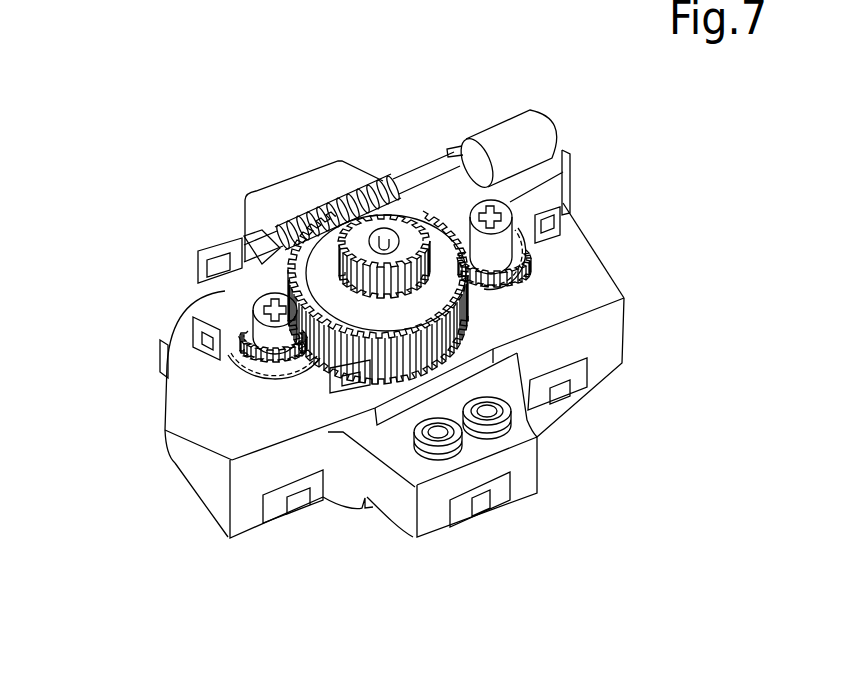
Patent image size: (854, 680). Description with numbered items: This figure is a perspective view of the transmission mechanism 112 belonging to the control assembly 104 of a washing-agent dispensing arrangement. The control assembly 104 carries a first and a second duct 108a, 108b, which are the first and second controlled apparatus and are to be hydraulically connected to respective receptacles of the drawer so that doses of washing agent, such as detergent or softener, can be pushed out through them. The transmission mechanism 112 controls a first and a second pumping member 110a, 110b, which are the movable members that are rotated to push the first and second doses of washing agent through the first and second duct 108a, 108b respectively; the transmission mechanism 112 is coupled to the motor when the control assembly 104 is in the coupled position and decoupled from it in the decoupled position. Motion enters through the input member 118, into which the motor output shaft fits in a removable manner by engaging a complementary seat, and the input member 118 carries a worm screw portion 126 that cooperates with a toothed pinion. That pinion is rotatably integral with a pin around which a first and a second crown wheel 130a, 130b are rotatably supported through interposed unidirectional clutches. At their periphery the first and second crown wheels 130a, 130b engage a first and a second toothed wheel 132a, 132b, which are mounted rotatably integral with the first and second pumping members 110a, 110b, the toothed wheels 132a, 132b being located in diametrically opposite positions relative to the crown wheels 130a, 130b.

The control assembly 104 is at (668, 208).
The first duct 108a is at (503, 440).
The second duct 108b is at (437, 463).
The first pumping member 110a is at (505, 205).
The second pumping member 110b is at (250, 301).
The transmission mechanism 112 is at (243, 358).
The input member 118 is at (427, 160).
The worm screw portion 126 is at (323, 212).
The first crown wheel 130a is at (390, 370).
The second crown wheel 130b is at (440, 260).
The first toothed wheel 132a is at (533, 263).
The second toothed wheel 132b is at (272, 357).